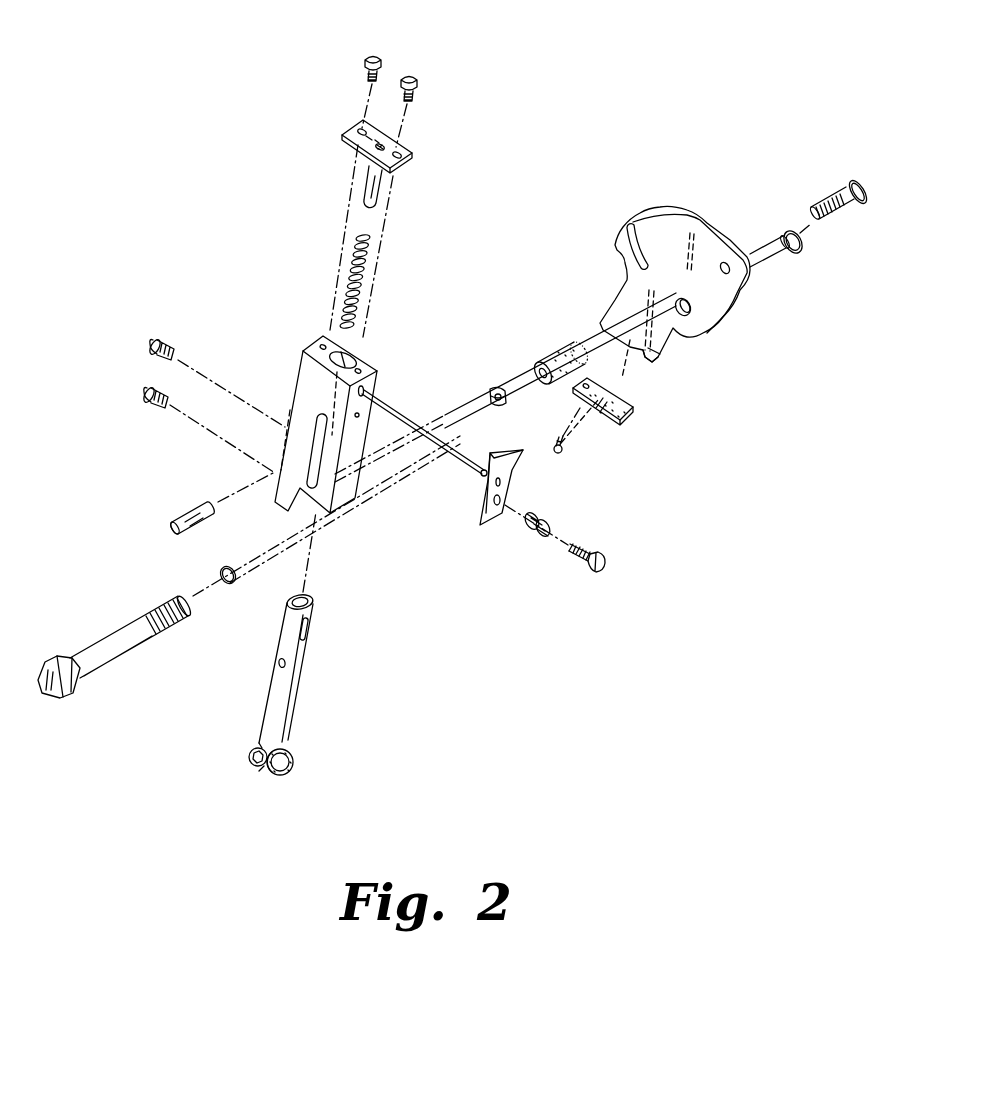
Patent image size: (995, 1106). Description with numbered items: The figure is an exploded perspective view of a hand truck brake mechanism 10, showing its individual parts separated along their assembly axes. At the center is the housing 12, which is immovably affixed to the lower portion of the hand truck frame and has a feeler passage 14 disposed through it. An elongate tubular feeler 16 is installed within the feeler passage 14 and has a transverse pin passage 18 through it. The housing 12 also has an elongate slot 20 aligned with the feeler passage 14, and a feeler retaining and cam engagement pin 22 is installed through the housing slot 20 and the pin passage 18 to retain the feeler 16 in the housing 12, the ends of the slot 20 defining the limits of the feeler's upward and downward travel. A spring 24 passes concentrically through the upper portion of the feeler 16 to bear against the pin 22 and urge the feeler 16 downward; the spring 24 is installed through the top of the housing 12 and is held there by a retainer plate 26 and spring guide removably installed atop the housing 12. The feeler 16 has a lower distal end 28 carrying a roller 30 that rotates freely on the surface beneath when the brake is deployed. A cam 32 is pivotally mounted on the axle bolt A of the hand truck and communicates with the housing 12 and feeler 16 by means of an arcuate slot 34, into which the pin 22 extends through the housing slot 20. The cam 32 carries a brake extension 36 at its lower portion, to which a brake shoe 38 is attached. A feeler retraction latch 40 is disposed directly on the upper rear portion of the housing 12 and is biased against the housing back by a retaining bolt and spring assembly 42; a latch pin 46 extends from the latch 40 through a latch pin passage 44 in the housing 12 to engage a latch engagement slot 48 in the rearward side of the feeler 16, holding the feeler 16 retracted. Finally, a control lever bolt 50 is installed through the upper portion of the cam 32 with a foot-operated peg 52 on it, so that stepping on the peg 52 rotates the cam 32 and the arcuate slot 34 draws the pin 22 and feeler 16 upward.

The brake mechanism 10 is at (152, 78).
The housing 12 is at (292, 390).
The feeler passage 14 is at (300, 349).
The feeler 16 is at (297, 700).
The pin passage 18 is at (277, 661).
The slot 20 is at (320, 460).
The feeler retaining and cam engagement pin 22 is at (180, 504).
The spring 24 is at (345, 273).
The retainer plate 26 is at (412, 152).
The lower distal end 28 is at (252, 748).
The roller 30 is at (293, 767).
The cam 32 is at (703, 207).
The arcuate slot 34 is at (613, 247).
The brake extension 36 is at (657, 363).
The brake shoe 38 is at (613, 425).
The feeler retraction latch 40 is at (480, 523).
The retaining bolt and spring assembly 42 is at (592, 525).
The latch pin passage 44 is at (365, 392).
The latch pin 46 is at (488, 455).
The latch engagement slot 48 is at (313, 625).
The control lever bolt 50 is at (828, 190).
The foot-operated peg 52 is at (547, 355).
The axle bolt A is at (106, 628).